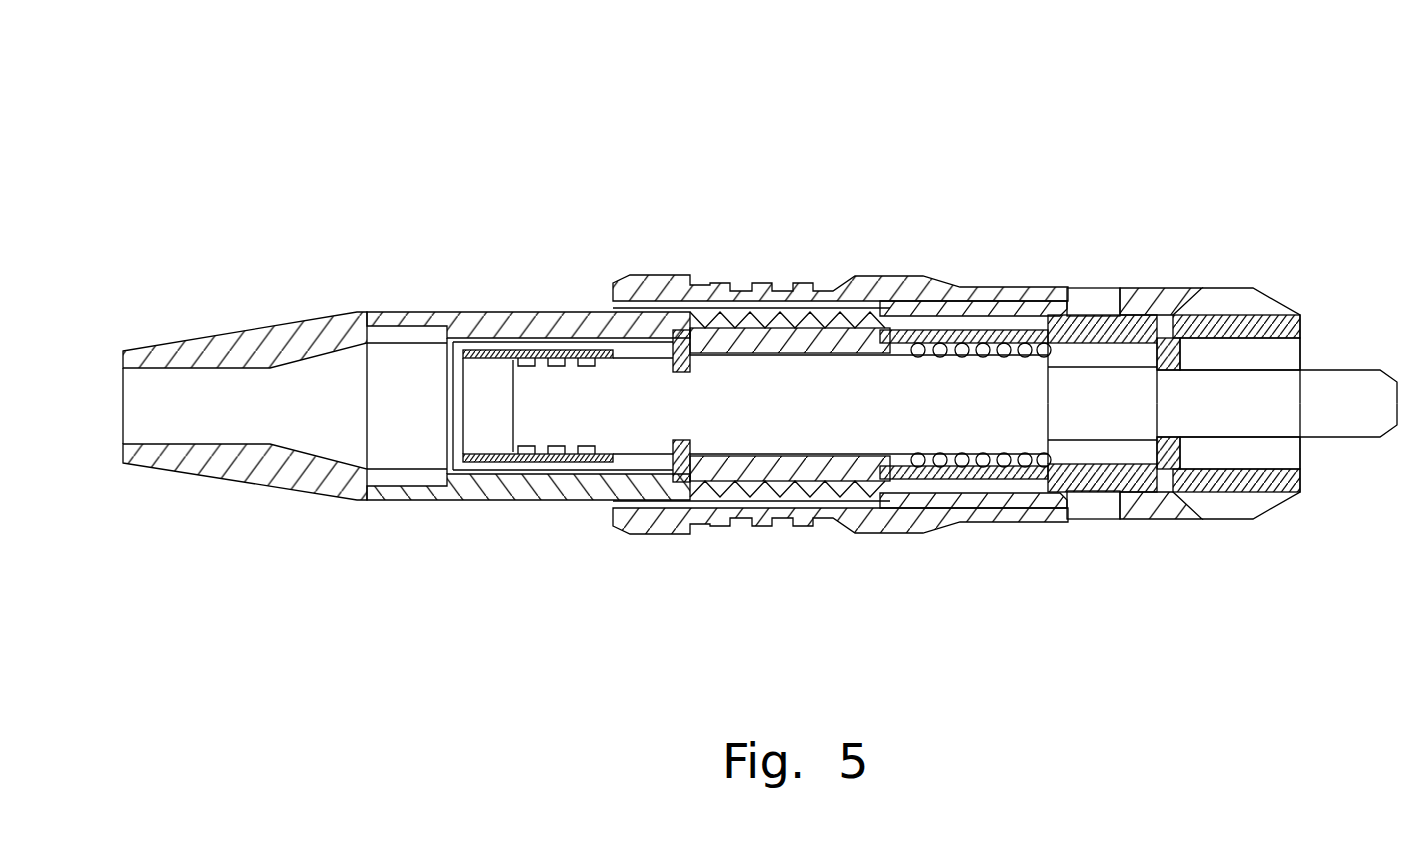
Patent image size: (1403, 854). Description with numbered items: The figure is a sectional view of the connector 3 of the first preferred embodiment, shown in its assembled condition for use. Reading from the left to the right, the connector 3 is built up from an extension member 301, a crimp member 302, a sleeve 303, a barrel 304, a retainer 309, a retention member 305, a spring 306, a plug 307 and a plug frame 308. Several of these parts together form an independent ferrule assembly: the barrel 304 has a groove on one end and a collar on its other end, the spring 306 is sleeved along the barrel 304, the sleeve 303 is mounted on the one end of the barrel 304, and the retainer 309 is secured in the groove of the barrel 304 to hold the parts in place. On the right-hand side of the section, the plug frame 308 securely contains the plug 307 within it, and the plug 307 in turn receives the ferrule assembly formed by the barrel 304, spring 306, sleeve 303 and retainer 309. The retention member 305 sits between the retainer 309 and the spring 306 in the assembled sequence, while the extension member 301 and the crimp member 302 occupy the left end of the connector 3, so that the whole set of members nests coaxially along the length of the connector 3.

The connector 3 is at (1267, 137).
The extension member 301 is at (258, 350).
The crimp member 302 is at (538, 322).
The sleeve 303 is at (572, 352).
The barrel 304 is at (797, 382).
The retention member 305 is at (882, 318).
The spring 306 is at (988, 345).
The plug 307 is at (1080, 330).
The plug frame 308 is at (938, 533).
The retainer 309 is at (683, 338).